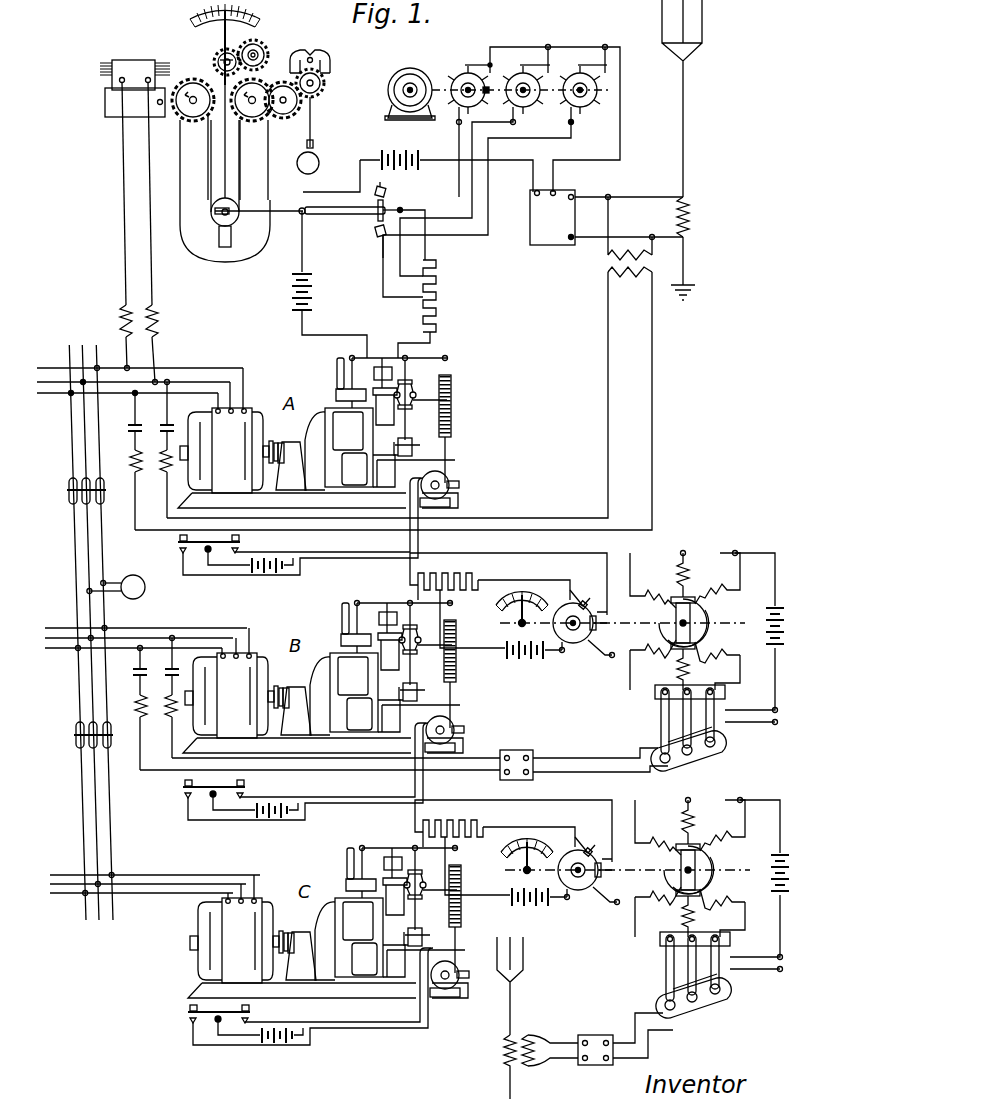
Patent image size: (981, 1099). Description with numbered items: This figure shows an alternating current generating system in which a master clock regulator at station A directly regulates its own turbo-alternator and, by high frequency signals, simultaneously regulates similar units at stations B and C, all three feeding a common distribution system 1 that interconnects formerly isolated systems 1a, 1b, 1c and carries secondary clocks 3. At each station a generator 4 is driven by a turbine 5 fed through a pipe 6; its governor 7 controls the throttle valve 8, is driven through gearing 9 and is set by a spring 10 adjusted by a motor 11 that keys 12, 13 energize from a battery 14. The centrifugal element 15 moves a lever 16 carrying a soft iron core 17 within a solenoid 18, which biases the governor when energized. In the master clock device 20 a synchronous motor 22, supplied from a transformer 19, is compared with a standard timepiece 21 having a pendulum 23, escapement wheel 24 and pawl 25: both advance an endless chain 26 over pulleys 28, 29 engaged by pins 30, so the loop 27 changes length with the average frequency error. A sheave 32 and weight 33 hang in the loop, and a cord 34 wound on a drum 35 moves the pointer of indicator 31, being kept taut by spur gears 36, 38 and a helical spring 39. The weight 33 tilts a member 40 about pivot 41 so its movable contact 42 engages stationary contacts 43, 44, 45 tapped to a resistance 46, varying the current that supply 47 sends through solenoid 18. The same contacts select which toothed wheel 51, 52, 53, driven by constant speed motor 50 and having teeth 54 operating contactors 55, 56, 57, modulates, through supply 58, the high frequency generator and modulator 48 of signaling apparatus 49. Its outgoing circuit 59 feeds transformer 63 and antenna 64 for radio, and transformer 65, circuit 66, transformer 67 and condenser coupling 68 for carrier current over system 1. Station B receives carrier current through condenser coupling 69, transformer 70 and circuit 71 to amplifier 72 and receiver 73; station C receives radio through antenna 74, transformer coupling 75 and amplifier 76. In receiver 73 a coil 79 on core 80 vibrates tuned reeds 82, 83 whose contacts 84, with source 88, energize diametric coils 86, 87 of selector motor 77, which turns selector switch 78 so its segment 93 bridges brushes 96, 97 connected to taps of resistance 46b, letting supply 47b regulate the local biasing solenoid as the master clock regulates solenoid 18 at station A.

The alternating current distribution system 1 is at (102, 544).
The isolated system 1a is at (140, 372).
The isolated system 1b is at (145, 630).
The isolated system 1c is at (154, 876).
The secondary clocks 3 is at (116, 595).
The alternating current generator 4 is at (229, 450).
The turbine 5 is at (354, 469).
The pipe 6 is at (335, 372).
The speed-governing device 7 is at (424, 402).
The throttle valve 8 is at (349, 438).
The gearing 9 is at (406, 457).
The spring 10 is at (452, 420).
The electric motor 11 is at (452, 490).
The key 12 is at (244, 541).
The key 13 is at (178, 545).
The battery 14 is at (263, 571).
The centrifugal element 15 is at (416, 390).
The lever 16 is at (440, 355).
The soft iron core 17 is at (385, 358).
The solenoid 18 is at (385, 384).
The transformer 19 is at (146, 343).
The master clock speed-regulating device 20 is at (320, 43).
The standard timepiece 21 is at (300, 100).
The synchronous motor 22 is at (135, 182).
The pendulum 23 is at (308, 135).
The escapement wheel 24 is at (322, 88).
The pawl 25 is at (322, 58).
The belt or chain 26 is at (178, 190).
The loop 27 is at (213, 173).
The driving pulley 28 is at (204, 128).
The driving pulley 29 is at (262, 122).
The pins 30 is at (196, 80).
The indicator 31 is at (215, 43).
The sheave 32 is at (217, 218).
The movable weight 33 is at (231, 236).
The cord 34 is at (228, 177).
The drum 35 is at (218, 58).
The spur gear 36 is at (260, 44).
The spur gear 38 is at (220, 52).
The helical spring 39 is at (259, 53).
The contact arm 40 is at (322, 216).
The pivot 41 is at (298, 216).
The movable contact 42 is at (372, 218).
The stationary contact 43 is at (371, 186).
The stationary contact 44 is at (394, 205).
The stationary contact 45 is at (375, 241).
The resistance 46 is at (435, 283).
The resistance 46b is at (445, 572).
The source of supply 47 is at (329, 314).
The source of supply 47b is at (525, 663).
The high frequency generator and modulator 48 is at (552, 217).
The rotary contact device 49 is at (526, 108).
The constant speed motor 50 is at (396, 74).
The toothed wheel 51 is at (473, 131).
The toothed wheel 52 is at (512, 137).
The toothed wheel 53 is at (545, 146).
The teeth 54 is at (455, 75).
The contactor 55 is at (477, 59).
The contactor 56 is at (535, 59).
The contactor 57 is at (592, 59).
The source of supply 58 is at (418, 162).
The outgoing circuit 59 is at (634, 206).
The transformer 63 is at (694, 248).
The antenna 64 is at (693, 98).
The transformer 65 is at (617, 237).
The circuit 66 is at (650, 397).
The transformer 67 is at (142, 490).
The condenser coupling 68 is at (151, 416).
The condenser coupling 69 is at (156, 666).
The transformer 70 is at (146, 732).
The circuit 71 is at (455, 773).
The amplifying apparatus 72 is at (510, 752).
The selective receiver 73 is at (690, 762).
The antenna 74 is at (521, 986).
The transformer coupling 75 is at (541, 1057).
The amplifier 76 is at (596, 1036).
The selector motor 77 is at (704, 623).
The selector switch 78 is at (569, 634).
The coil 79 is at (725, 755).
The core 80 is at (680, 772).
The vibratory reed 82 is at (718, 733).
The vibratory reed 83 is at (660, 705).
The contacts 84 is at (722, 700).
The coil 86 is at (652, 582).
The coil 87 is at (690, 570).
The source of supply 88 is at (764, 639).
The contact segment 93 is at (570, 598).
The brush 96 is at (608, 610).
The brush 97 is at (607, 649).